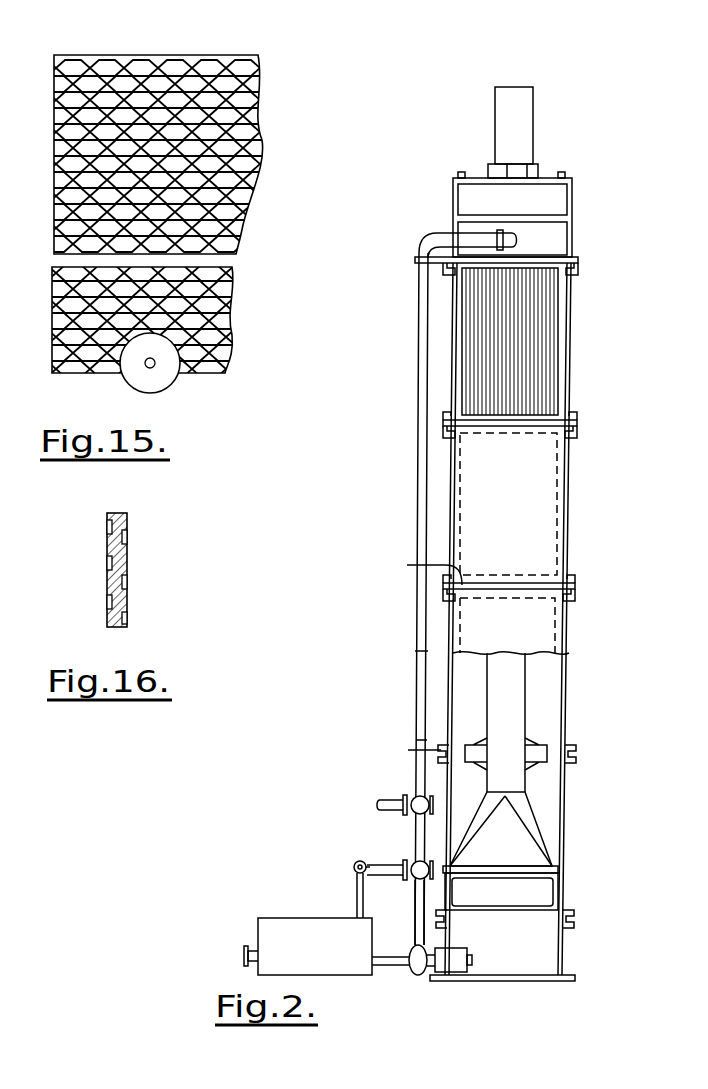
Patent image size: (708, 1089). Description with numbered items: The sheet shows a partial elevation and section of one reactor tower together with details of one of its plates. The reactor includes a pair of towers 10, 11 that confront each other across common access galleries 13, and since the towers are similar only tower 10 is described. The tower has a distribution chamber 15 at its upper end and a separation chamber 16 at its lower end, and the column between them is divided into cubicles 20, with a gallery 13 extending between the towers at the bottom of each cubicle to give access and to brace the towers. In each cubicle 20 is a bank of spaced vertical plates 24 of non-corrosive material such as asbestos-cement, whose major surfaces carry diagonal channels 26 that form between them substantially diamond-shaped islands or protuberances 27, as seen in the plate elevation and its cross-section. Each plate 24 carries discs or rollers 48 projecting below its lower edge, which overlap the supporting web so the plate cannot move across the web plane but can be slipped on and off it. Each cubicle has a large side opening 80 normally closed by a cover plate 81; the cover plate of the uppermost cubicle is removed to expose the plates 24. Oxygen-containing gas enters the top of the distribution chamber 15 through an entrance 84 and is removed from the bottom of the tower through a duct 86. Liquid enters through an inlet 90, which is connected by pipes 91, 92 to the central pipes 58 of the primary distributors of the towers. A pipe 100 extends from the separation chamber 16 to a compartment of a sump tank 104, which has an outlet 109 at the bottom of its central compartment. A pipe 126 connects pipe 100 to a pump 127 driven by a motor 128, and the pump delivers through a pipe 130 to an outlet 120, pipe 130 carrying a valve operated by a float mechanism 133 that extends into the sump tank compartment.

In FIG. 2, the tower 10 is at (561, 480).
In FIG. 2, the tower 11 is at (557, 713).
In FIG. 2, the access gallery 13 is at (424, 572).
In FIG. 2, the distribution chamber 15 is at (557, 238).
In FIG. 15, the separation chamber 16 is at (32, 173).
In FIG. 2, the separation chamber 16 is at (542, 946).
In FIG. 2, the cubicle 20 is at (463, 450).
In FIG. 15, the plate 24 is at (245, 190).
In FIG. 16, the plate 24 is at (127, 572).
In FIG. 2, the plate 24 is at (540, 340).
In FIG. 15, the channel 26 is at (164, 58).
In FIG. 16, the channel 26 is at (100, 578).
In FIG. 15, the protuberance 27 is at (252, 105).
In FIG. 16, the protuberance 27 is at (100, 618).
In FIG. 15, the roller 48 is at (165, 387).
In FIG. 2, the central pipe 58 is at (516, 244).
In FIG. 2, the opening 80 is at (548, 300).
In FIG. 2, the cover plate 81 is at (538, 456).
In FIG. 2, the entrance 84 is at (505, 160).
In FIG. 2, the duct 86 is at (520, 841).
In FIG. 2, the inlet 90 is at (394, 800).
In FIG. 2, the pipe 91 is at (420, 525).
In FIG. 2, the pipe 92 is at (418, 712).
In FIG. 2, the pipe 100 is at (378, 957).
In FIG. 2, the sump tank 104 is at (290, 918).
In FIG. 2, the outlet 109 is at (250, 950).
In FIG. 2, the outlet 120 is at (398, 865).
In FIG. 2, the pipe 126 is at (417, 975).
In FIG. 2, the pump 127 is at (428, 950).
In FIG. 2, the motor 128 is at (470, 957).
In FIG. 2, the pipe 130 is at (412, 898).
In FIG. 2, the float mechanism 133 is at (356, 872).